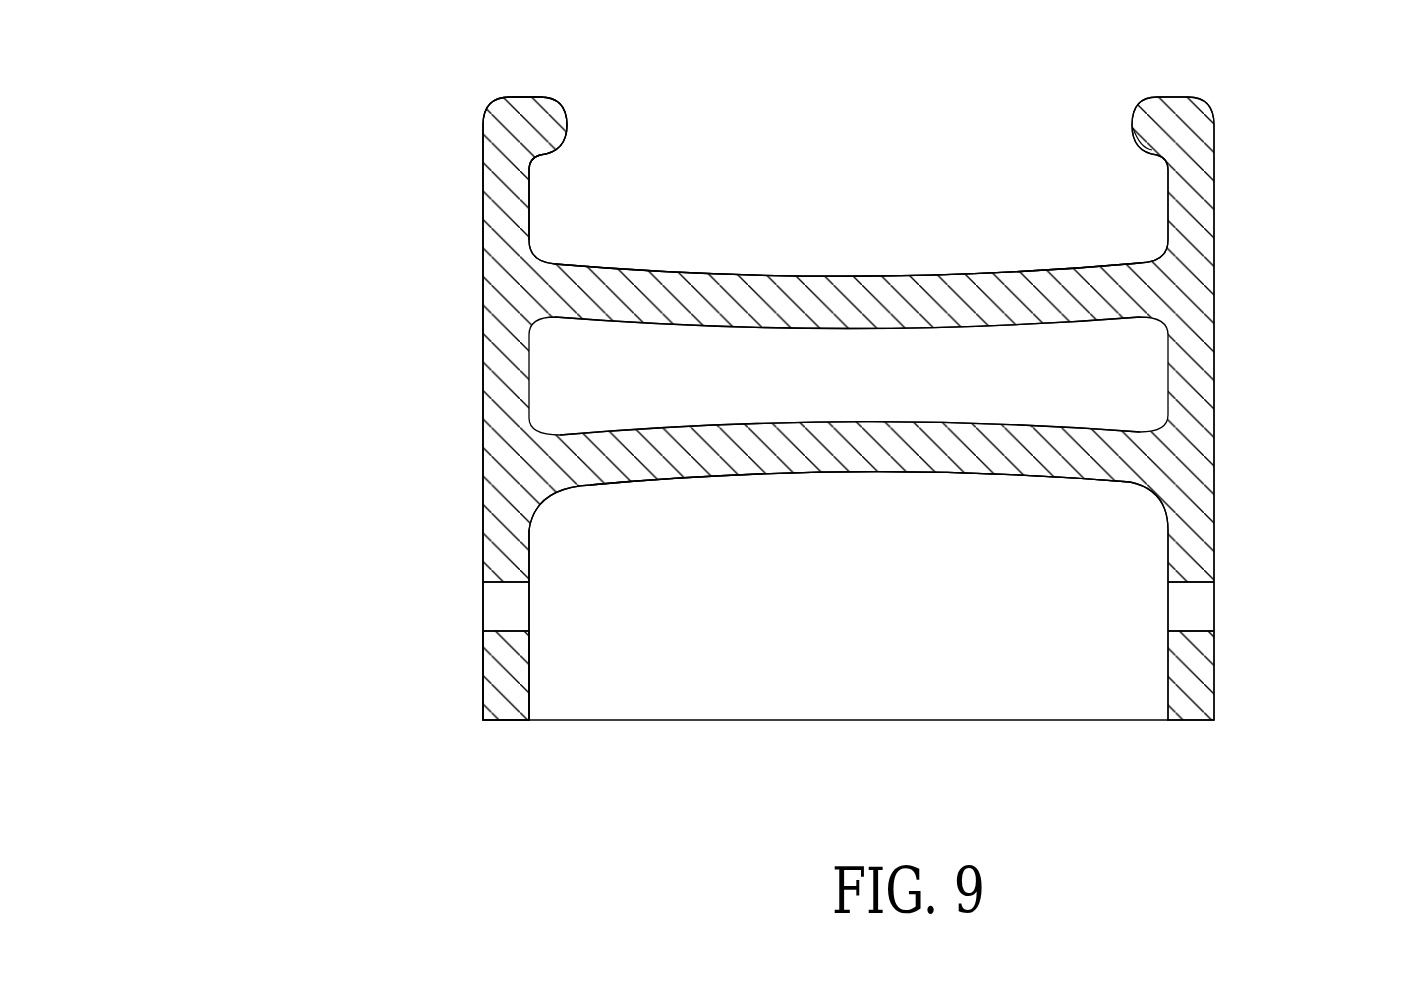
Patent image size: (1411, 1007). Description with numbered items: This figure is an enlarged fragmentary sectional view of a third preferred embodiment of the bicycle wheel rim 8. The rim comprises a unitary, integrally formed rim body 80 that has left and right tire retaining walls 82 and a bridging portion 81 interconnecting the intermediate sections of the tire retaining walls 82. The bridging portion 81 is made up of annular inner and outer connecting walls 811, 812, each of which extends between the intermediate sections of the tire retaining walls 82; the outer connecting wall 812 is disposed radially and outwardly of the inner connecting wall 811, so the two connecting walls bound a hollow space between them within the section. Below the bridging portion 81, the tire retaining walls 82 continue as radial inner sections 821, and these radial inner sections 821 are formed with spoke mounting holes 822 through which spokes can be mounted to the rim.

The bicycle wheel rim 8 is at (426, 454).
The rim body 80 is at (1207, 268).
The bridging portion 81 is at (851, 258).
The inner connecting wall 811 is at (822, 450).
The outer connecting wall 812 is at (958, 312).
The tire retaining wall 82 is at (506, 290).
The radial inner section 821 is at (505, 683).
The spoke mounting hole 822 is at (510, 630).